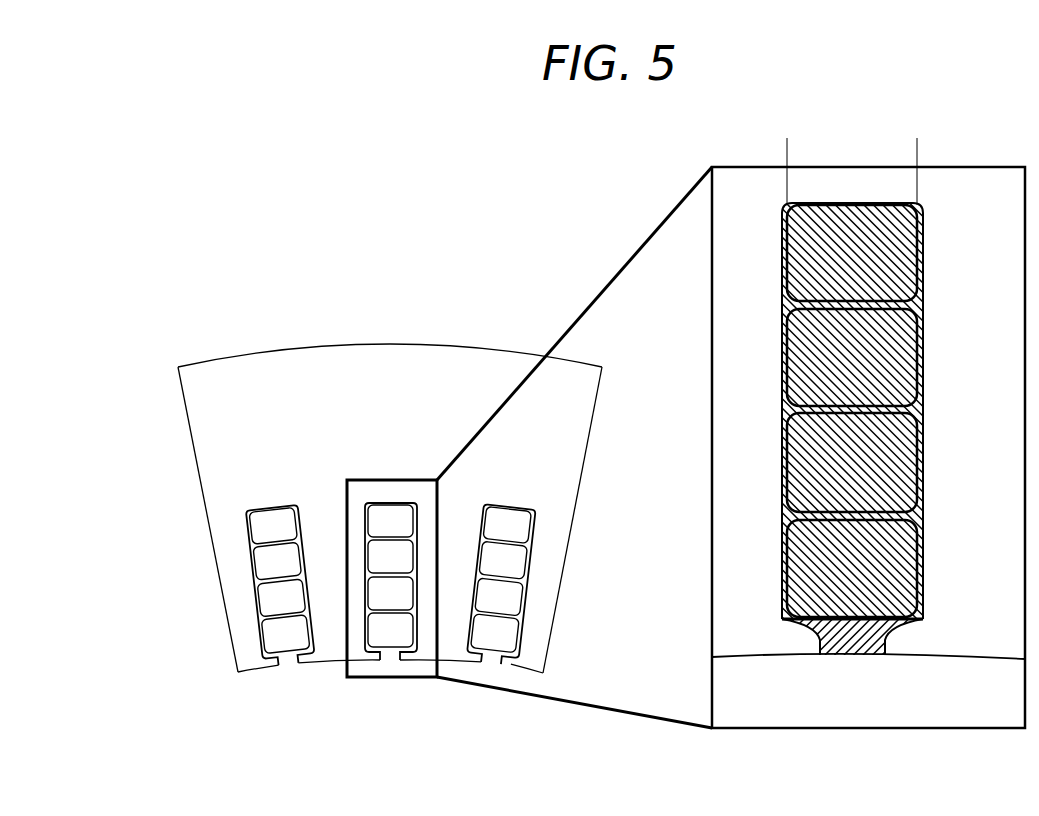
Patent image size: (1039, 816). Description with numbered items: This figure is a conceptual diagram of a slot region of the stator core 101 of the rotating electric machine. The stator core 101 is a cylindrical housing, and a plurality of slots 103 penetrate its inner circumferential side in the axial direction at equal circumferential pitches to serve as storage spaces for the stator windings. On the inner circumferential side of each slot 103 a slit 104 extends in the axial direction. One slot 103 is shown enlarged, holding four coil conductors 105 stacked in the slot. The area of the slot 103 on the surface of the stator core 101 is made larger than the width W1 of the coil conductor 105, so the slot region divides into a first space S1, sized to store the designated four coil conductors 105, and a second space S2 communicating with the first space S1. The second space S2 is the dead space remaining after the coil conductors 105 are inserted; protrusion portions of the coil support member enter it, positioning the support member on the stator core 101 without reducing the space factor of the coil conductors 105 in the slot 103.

The stator core 101 is at (560, 442).
The slot 103 is at (495, 657).
The slit 104 is at (278, 660).
The coil conductor 105 is at (505, 533).
The first space S1 is at (915, 408).
The second space S2 is at (897, 631).
The width of the coil conductor W1 is at (917, 151).